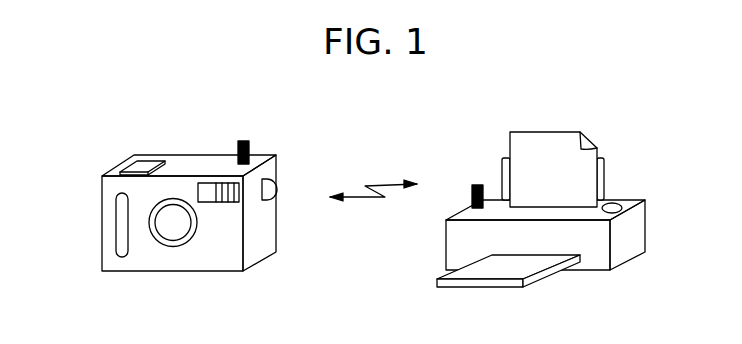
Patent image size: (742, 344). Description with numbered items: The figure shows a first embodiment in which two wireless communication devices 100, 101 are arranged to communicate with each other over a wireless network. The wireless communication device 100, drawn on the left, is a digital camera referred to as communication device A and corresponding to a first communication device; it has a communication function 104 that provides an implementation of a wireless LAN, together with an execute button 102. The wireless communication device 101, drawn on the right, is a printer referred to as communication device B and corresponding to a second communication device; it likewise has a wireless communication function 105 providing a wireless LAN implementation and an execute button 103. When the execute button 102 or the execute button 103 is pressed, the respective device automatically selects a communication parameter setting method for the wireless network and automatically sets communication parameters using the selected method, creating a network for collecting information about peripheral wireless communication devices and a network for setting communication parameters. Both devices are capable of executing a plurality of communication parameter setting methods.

The wireless communication device 100 is at (102, 176).
The wireless communication device 101 is at (647, 237).
The execute button 102 is at (278, 177).
The execute button 103 is at (618, 203).
The communication function 104 is at (249, 142).
The wireless communication function 105 is at (473, 187).